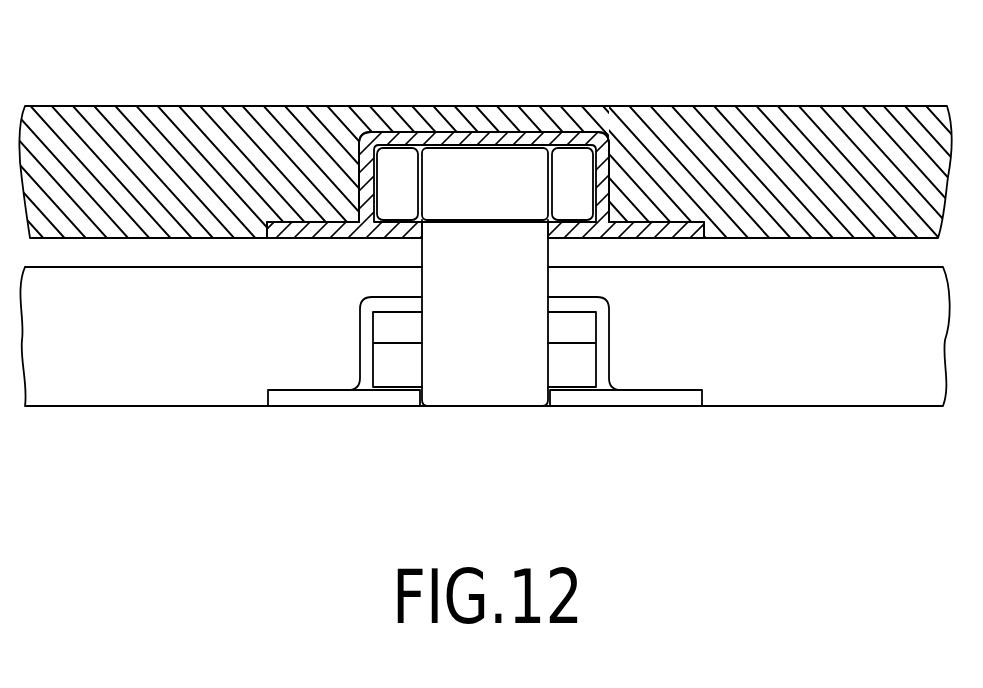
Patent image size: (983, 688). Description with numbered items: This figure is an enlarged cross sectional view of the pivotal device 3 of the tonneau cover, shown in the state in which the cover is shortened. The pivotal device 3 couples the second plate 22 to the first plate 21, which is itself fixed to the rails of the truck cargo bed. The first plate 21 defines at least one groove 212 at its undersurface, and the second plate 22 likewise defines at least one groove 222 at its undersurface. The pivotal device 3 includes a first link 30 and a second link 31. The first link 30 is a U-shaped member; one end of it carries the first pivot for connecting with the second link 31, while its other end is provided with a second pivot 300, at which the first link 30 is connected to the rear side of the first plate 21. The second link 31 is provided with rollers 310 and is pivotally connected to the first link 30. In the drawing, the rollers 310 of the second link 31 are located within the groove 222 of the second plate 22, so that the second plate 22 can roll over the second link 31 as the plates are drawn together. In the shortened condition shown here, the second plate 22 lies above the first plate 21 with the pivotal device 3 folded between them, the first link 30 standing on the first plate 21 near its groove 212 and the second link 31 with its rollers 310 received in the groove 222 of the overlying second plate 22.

The pivotal device 3 is at (509, 272).
The first plate 21 is at (837, 382).
The second plate 22 is at (814, 127).
The first link 30 is at (478, 373).
The second link 31 is at (475, 177).
The groove 212 is at (380, 324).
The groove 222 is at (513, 140).
The second pivot 300 is at (393, 368).
The rollers 310 is at (395, 167).